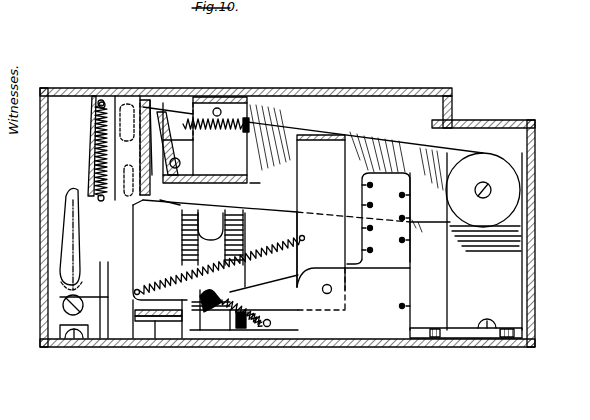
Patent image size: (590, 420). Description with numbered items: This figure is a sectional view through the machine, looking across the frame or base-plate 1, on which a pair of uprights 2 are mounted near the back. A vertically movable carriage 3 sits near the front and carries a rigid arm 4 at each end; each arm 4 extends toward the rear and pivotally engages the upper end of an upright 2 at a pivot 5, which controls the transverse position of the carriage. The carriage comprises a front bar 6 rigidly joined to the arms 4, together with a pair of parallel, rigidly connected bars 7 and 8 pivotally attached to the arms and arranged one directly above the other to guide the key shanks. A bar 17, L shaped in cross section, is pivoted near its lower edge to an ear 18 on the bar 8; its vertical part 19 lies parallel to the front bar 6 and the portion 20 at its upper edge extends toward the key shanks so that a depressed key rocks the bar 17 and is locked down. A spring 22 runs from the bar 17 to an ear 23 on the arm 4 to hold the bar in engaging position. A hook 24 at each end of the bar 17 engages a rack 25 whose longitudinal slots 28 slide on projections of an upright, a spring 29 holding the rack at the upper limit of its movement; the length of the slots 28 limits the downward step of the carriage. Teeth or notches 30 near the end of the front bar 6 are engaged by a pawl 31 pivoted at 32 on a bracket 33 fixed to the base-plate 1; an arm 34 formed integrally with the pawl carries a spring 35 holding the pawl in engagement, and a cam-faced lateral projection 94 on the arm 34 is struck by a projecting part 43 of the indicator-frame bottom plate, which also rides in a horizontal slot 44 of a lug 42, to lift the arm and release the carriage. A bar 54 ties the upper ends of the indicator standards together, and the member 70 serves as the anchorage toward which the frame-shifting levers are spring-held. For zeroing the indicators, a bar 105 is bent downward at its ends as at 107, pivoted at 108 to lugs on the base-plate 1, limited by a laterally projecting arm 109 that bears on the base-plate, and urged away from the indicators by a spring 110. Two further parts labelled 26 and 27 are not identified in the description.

The frame or base-plate 1 is at (185, 345).
The uprights 2 is at (514, 256).
The carriage 3 is at (163, 114).
The arm 4 is at (288, 133).
The pivot 5 is at (483, 182).
The front bar 6 is at (90, 140).
The bar 7 is at (238, 98).
The bar 8 is at (250, 172).
The bar 17 is at (170, 150).
The ear 18 is at (150, 198).
The vertical part 19 is at (181, 163).
The portion 20 is at (170, 118).
The spring 22 is at (219, 112).
The ear 23 is at (252, 121).
The hook 24 is at (156, 110).
The rack 25 is at (128, 128).
The carriage 26 is at (136, 227).
The lever 27 is at (100, 101).
The longitudinal slots 28 is at (92, 172).
The spring 29 is at (92, 152).
The teeth or notches 30 is at (116, 182).
The pawl 31 is at (72, 236).
The pivot 32 is at (63, 305).
The bracket 33 is at (60, 323).
The arm 34 is at (106, 312).
The spring 35 is at (240, 318).
The lugs 42 is at (128, 320).
The projecting part 43 is at (153, 322).
The horizontal slot 44 is at (166, 329).
The bar 54 is at (204, 312).
The member 70 is at (404, 272).
The lateral projection 94 is at (206, 305).
The bar 105 is at (345, 131).
The upright portion 107 is at (378, 229).
The pivot 108 is at (331, 291).
The laterally projecting arm 109 is at (272, 292).
The spring 110 is at (258, 250).